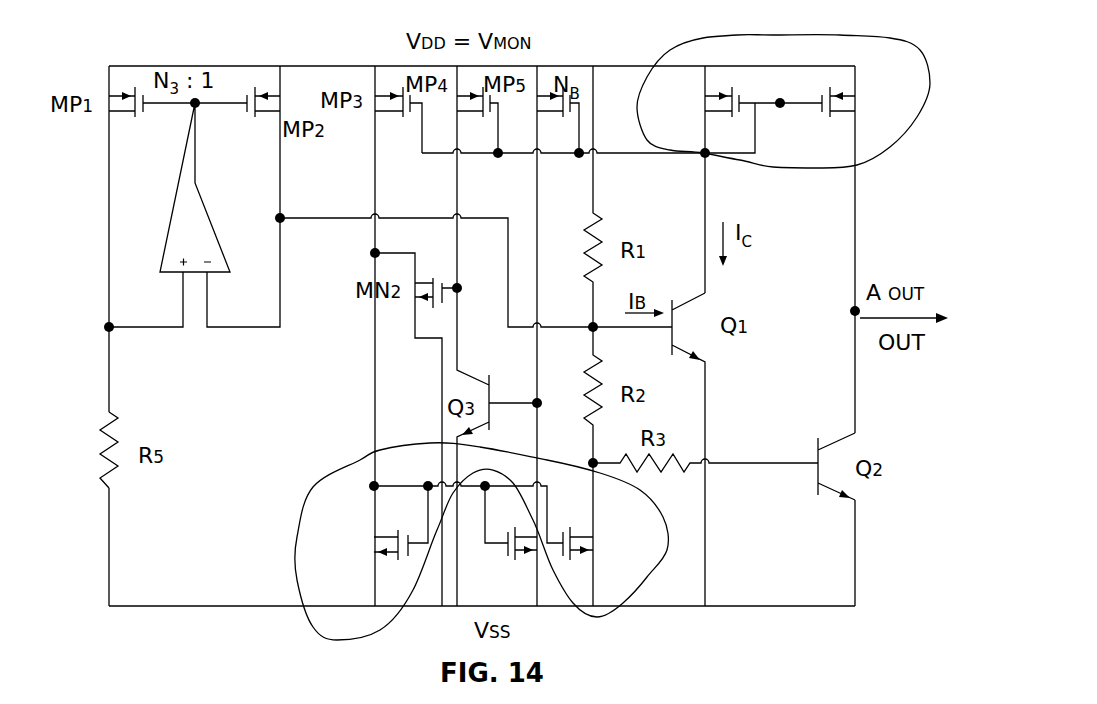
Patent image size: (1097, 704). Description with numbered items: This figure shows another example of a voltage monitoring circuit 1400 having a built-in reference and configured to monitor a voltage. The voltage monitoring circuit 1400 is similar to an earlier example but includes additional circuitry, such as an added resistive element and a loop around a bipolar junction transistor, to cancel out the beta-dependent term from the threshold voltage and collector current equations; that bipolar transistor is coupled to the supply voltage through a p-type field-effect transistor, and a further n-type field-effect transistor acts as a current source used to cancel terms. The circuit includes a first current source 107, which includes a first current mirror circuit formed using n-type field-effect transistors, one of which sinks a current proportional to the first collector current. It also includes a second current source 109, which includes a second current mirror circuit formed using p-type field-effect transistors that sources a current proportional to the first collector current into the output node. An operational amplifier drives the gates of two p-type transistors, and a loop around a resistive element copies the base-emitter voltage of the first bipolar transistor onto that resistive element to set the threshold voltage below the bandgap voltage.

The voltage monitoring circuit 1400 is at (159, 24).
The first current source 107 is at (360, 460).
The second current source 109 is at (843, 36).